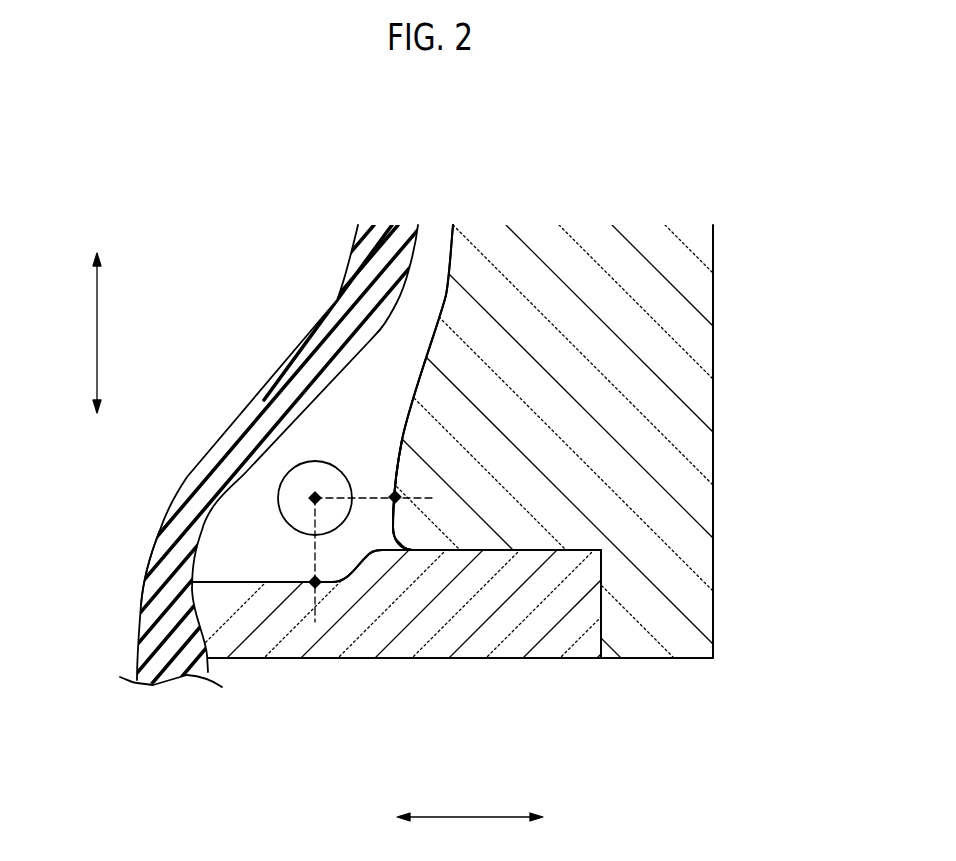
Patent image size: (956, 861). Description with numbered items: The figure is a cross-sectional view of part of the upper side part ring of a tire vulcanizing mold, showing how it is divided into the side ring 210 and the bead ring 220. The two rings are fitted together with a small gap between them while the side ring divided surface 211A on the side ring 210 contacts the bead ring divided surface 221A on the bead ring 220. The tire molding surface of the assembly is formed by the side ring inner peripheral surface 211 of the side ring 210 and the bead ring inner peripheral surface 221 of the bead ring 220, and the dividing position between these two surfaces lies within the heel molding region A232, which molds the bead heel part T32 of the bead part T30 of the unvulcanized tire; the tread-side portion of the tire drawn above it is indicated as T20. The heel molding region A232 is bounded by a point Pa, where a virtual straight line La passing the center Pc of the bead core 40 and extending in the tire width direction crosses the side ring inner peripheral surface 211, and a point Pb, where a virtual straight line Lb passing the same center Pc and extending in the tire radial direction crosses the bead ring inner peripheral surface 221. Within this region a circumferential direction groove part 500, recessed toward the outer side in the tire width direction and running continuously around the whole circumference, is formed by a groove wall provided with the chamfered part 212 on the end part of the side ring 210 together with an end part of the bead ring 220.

The tooth tip of first tooth T20 is at (435, 257).
The bead part of the unvulcanized tire T30 is at (232, 520).
The bead core 40 is at (280, 498).
The center of the bead core Pc is at (315, 484).
The virtual straight line La is at (342, 463).
The virtual straight line Lb is at (312, 545).
The circumferential direction groove part 500 is at (383, 532).
The point Pa is at (397, 497).
The point Pb is at (318, 584).
The side ring 210 is at (680, 284).
The side ring inner peripheral surface 211 is at (436, 331).
The chamfered part 212 is at (400, 542).
The side ring divided surface 211A is at (584, 551).
The bead ring 220 is at (588, 600).
The bead ring inner peripheral surface 221 is at (270, 581).
The bead heel part T32 is at (348, 553).
The heel molding region A232 is at (372, 566).
The bead ring divided surface 221A is at (548, 548).